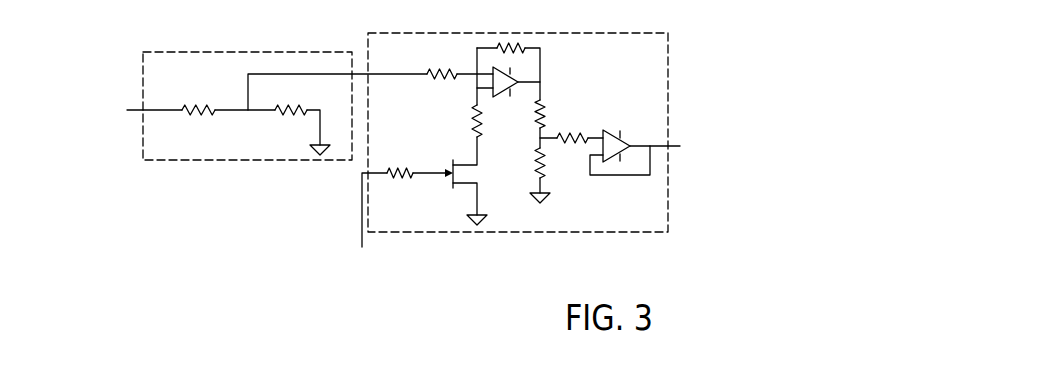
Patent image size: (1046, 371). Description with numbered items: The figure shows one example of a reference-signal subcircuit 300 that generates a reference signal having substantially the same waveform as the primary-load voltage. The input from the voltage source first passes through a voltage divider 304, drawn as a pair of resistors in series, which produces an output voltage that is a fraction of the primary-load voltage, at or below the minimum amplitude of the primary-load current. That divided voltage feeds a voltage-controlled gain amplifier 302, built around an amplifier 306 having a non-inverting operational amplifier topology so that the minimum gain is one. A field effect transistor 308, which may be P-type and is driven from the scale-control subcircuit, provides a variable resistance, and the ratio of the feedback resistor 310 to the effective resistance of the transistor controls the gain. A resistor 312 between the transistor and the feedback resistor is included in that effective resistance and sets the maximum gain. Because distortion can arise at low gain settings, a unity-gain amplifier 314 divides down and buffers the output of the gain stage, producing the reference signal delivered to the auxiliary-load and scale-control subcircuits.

The reference-signal subcircuit 300 is at (262, 228).
The voltage-controlled gain amplifier 302 is at (442, 32).
The voltage divider 304 is at (248, 52).
The amplifier 306 is at (516, 148).
The field effect transistor 308 is at (465, 160).
The feedback resistor 310 is at (513, 33).
The resistor 312 is at (467, 123).
The unity-gain amplifier 314 is at (613, 127).